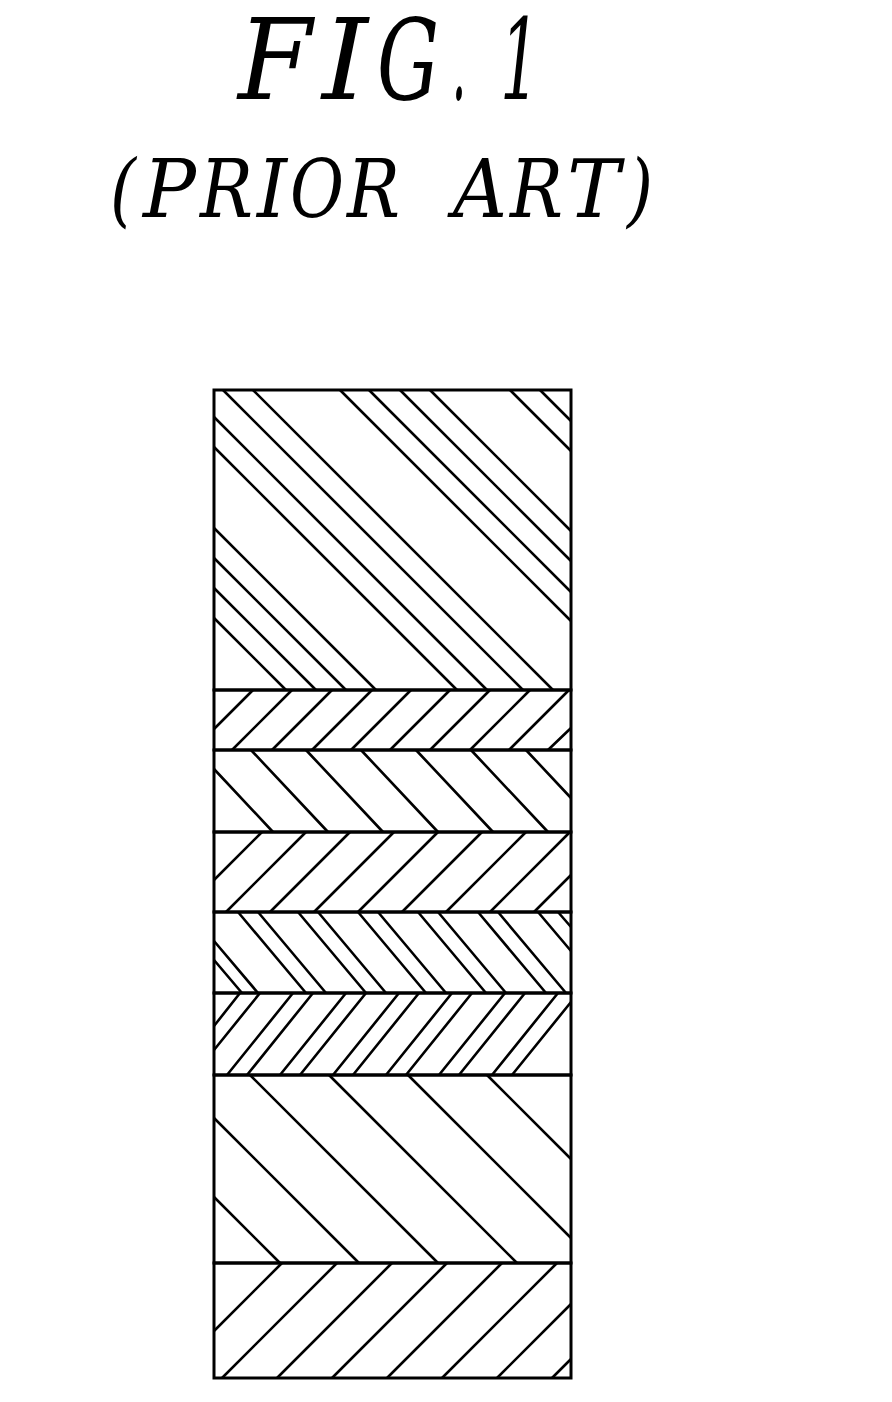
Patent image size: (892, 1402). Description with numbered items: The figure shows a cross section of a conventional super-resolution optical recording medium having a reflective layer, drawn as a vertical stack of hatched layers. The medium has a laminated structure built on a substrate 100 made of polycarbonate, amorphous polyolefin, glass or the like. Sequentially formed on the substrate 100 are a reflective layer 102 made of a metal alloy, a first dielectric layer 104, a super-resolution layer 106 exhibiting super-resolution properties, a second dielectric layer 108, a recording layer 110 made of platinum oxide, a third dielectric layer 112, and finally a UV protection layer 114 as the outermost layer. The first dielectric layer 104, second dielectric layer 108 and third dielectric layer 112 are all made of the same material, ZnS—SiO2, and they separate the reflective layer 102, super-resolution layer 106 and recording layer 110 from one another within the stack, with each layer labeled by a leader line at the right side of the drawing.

The substrate 100 is at (552, 531).
The reflective layer 102 is at (552, 718).
The first dielectric layer 104 is at (552, 797).
The super-resolution layer 106 is at (551, 877).
The second dielectric layer 108 is at (552, 948).
The recording layer 110 is at (552, 1033).
The third dielectric layer 112 is at (555, 1168).
The UV protection layer 114 is at (555, 1310).